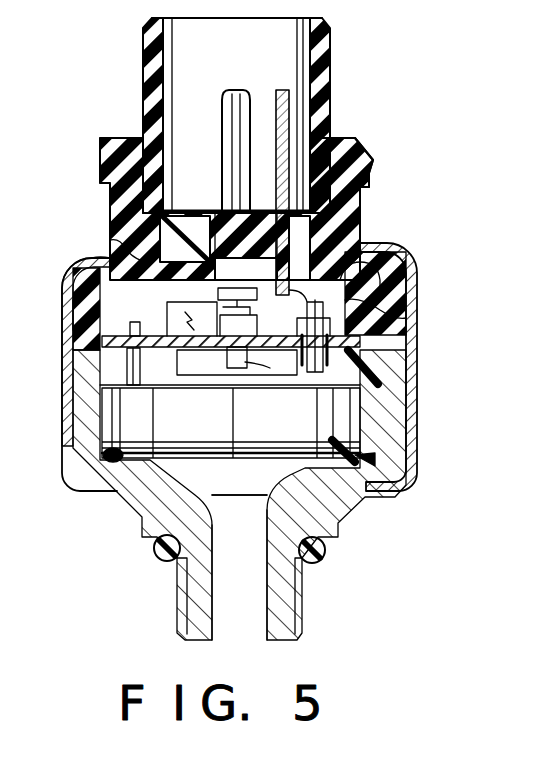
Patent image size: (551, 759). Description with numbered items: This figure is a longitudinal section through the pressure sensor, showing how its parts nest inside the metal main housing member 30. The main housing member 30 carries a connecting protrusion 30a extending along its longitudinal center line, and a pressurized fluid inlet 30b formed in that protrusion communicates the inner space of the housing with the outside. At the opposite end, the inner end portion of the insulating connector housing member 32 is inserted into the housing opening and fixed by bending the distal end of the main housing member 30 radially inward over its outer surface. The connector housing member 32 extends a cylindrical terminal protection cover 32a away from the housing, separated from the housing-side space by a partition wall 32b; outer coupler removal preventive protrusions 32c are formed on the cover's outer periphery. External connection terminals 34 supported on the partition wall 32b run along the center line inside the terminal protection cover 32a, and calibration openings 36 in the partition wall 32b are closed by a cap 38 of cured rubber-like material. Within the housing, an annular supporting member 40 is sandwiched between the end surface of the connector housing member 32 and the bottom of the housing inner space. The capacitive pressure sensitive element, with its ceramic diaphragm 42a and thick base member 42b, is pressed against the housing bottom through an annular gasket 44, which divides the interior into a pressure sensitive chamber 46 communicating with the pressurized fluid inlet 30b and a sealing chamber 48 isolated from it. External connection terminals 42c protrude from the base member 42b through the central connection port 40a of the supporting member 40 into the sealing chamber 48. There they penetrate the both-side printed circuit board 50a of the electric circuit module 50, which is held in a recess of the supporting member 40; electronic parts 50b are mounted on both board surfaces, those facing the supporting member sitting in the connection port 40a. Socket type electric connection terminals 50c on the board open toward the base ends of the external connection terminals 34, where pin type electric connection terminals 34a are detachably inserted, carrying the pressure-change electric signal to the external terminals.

The main housing member 30 is at (420, 422).
The connecting protrusion 30a is at (304, 606).
The pressurized fluid inlet 30b is at (216, 556).
The connector housing member 32 is at (360, 217).
The terminal protection cover 32a is at (330, 68).
The partition wall 32b is at (373, 162).
The outer coupler removal preventive protrusions 32c is at (357, 140).
The external connection terminals 34 is at (280, 92).
The pin type electric connection terminals 34a is at (205, 83).
The calibration openings 36 is at (115, 232).
The cap 38 is at (215, 206).
The supporting member 40 is at (418, 368).
The central connection port 40a is at (417, 346).
The diaphragm 42a is at (325, 550).
The base member 42b is at (412, 400).
The external connection terminals 42c is at (140, 356).
The annular gasket 44 is at (368, 472).
The pressure sensitive chamber 46 is at (190, 483).
The sealing chamber 48 is at (414, 283).
The electric circuit module 50 is at (70, 272).
The both-side printed circuit board 50a is at (68, 310).
The electronic parts 50b is at (270, 368).
The socket type electric connection terminals 50c is at (384, 243).